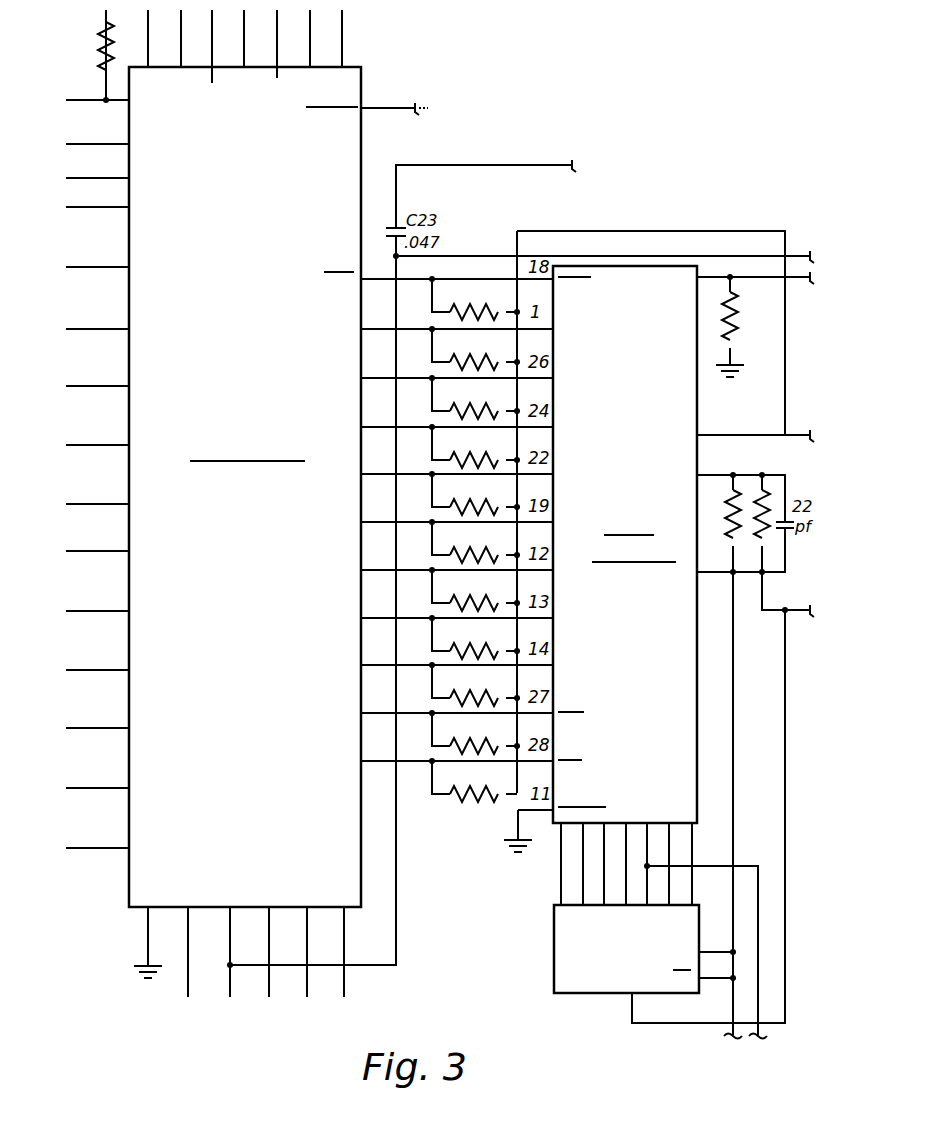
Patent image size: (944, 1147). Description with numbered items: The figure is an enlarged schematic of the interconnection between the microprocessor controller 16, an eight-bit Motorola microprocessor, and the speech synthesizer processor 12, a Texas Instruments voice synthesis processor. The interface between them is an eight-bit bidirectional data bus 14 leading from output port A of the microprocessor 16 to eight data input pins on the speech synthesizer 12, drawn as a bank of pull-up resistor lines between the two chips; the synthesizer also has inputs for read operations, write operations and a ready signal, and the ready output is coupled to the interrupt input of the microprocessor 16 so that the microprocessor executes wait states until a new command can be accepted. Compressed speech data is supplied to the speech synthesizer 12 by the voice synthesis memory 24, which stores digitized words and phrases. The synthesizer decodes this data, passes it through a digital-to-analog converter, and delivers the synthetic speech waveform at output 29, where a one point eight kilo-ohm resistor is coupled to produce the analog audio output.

The microprocessor controller 16 is at (256, 620).
The speech synthesizer processor 12 is at (648, 654).
The data bus 14 is at (464, 812).
The ROM memory unit 24 is at (588, 986).
The output 29 is at (746, 272).